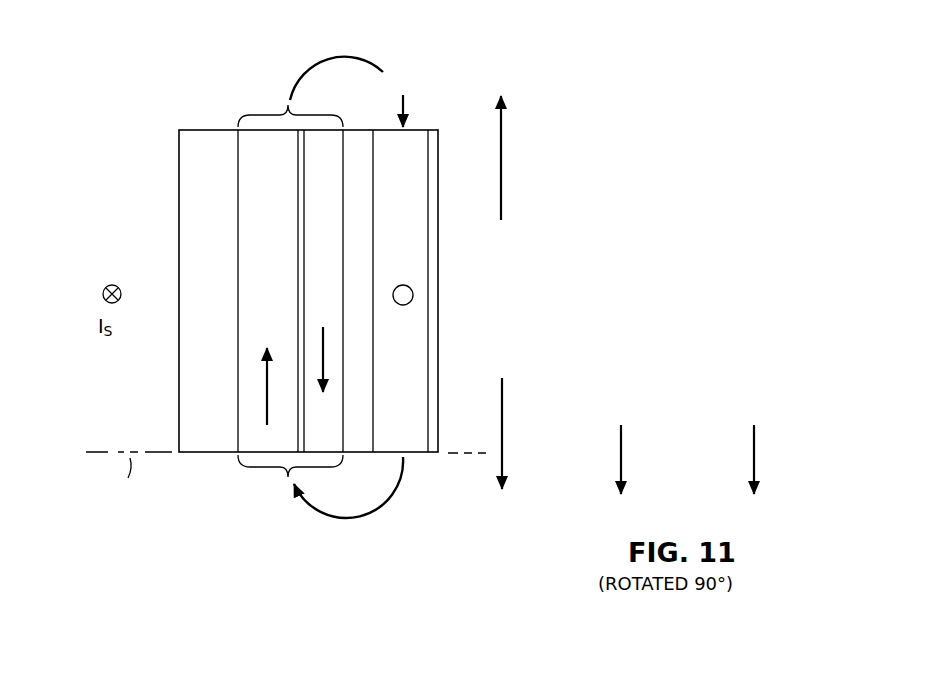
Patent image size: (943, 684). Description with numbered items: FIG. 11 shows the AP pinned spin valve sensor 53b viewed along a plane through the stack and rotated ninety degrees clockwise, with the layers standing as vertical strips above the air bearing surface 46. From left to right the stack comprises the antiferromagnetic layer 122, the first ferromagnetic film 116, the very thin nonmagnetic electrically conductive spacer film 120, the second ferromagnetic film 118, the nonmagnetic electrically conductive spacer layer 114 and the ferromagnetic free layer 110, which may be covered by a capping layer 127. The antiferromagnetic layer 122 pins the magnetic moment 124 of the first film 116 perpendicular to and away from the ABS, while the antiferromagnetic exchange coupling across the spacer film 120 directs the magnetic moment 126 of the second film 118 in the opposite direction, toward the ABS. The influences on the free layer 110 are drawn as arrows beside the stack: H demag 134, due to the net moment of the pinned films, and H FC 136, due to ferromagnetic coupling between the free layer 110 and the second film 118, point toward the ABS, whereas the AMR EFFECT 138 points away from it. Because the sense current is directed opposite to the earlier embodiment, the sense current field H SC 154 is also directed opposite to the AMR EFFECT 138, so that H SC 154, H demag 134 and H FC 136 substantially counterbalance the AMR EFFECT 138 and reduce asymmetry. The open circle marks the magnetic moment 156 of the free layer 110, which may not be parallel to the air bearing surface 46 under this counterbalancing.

The AP pinned spin valve sensor 53b is at (568, 95).
The ferromagnetic free layer 110 is at (412, 455).
The nonmagnetic electrically conductive spacer layer 114 is at (370, 343).
The first ferromagnetic film 116 is at (265, 450).
The second ferromagnetic film 118 is at (322, 448).
The nonmagnetic electrically conductive spacer film 120 is at (298, 155).
The antiferromagnetic layer 122 is at (204, 449).
The magnetic moment of the first film 124 is at (267, 397).
The magnetic moment of the second film 126 is at (323, 362).
The capping layer 127 is at (438, 257).
The H demag 134 is at (325, 58).
The H FC 136 is at (754, 450).
The AMR EFFECT 138 is at (501, 165).
The sense current field H SC 154 is at (502, 442).
The magnetic moment of the free layer 156 is at (413, 298).
The air bearing surface 46 is at (100, 452).